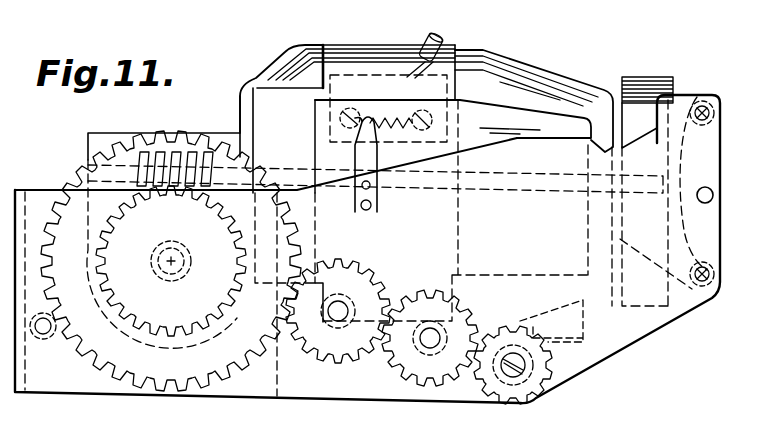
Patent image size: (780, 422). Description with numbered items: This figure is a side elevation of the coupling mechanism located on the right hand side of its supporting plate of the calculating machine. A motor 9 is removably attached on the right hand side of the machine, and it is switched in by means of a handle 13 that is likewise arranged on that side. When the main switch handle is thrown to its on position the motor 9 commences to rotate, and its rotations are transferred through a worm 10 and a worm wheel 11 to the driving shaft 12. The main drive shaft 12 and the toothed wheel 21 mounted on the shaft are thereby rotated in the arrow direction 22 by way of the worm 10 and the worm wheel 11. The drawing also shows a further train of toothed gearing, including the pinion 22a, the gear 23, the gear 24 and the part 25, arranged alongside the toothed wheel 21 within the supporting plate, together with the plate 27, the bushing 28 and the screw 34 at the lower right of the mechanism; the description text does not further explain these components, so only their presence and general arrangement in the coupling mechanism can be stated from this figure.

The motor 9 is at (298, 49).
The worm 10 is at (103, 152).
The worm wheel 11 is at (171, 230).
The driving shaft 12 is at (158, 261).
The handle 13 is at (440, 40).
The toothed wheel 21 is at (235, 147).
The arrow direction 22 is at (218, 291).
The pinion 22a is at (310, 318).
The gear 23 is at (457, 311).
The gear 24 is at (531, 347).
The bracket 25 is at (538, 368).
The plate 27 is at (642, 324).
The bushing 28 is at (518, 340).
The screw 34 is at (520, 373).